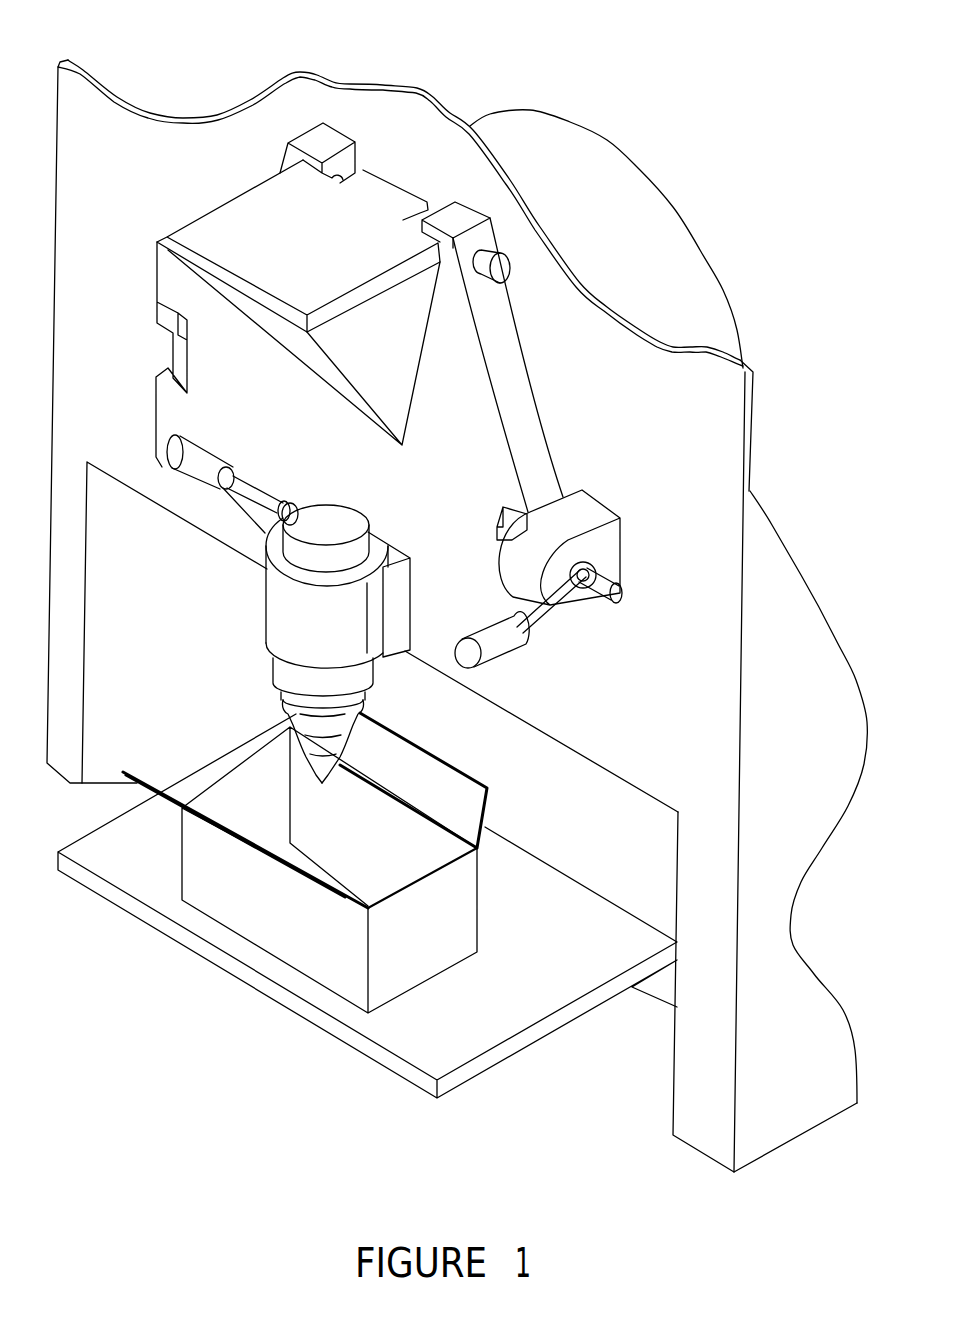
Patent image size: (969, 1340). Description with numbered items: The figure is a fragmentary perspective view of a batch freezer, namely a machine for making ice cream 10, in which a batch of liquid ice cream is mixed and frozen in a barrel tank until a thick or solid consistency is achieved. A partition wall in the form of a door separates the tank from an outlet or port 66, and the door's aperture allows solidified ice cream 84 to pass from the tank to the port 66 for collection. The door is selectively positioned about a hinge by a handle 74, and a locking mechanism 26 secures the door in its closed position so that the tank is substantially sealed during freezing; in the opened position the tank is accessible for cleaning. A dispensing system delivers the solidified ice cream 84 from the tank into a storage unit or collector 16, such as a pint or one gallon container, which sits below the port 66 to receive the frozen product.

The machine for making ice cream 10 is at (768, 90).
The collector 16 is at (202, 890).
The locking mechanism 26 is at (620, 537).
The port 66 is at (292, 695).
The handle 74 is at (505, 648).
The solidified ice cream 84 is at (363, 713).